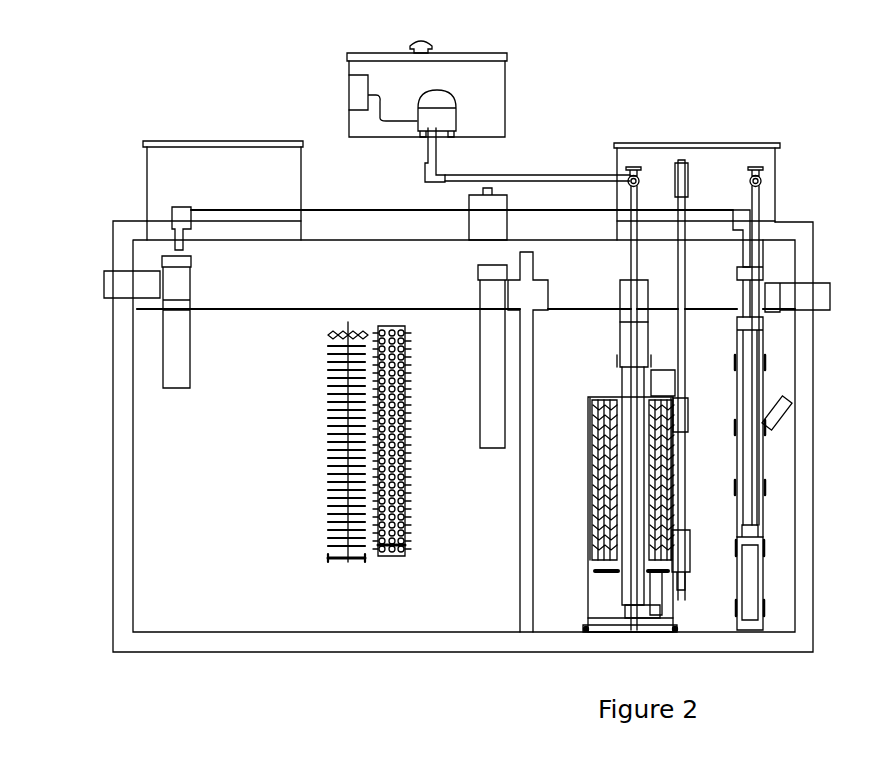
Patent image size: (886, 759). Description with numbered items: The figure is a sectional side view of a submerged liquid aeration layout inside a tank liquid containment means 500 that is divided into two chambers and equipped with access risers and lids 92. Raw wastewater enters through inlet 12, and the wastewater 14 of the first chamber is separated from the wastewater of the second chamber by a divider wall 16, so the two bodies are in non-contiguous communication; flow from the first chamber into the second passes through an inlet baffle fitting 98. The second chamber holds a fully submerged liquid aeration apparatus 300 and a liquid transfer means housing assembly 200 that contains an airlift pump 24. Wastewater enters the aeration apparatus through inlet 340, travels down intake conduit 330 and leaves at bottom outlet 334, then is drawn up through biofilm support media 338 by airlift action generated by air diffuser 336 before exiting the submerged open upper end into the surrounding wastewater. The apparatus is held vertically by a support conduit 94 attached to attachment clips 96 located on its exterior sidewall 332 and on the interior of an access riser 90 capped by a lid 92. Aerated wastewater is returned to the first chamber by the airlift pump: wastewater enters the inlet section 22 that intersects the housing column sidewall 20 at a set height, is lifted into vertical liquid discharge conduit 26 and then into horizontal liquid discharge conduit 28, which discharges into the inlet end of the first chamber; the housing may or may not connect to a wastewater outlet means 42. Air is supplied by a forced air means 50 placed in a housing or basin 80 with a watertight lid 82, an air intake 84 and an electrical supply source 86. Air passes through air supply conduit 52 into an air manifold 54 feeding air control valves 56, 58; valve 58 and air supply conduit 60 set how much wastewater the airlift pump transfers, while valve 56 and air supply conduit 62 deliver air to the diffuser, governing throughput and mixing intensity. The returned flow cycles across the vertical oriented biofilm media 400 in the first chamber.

The inlet 12 is at (113, 282).
The wastewater 14 is at (337, 308).
The divider wall 16 is at (520, 557).
The housing column sidewall 20 is at (763, 368).
The inlet section 22 is at (778, 426).
The airlift pump 24 is at (750, 582).
The vertical liquid discharge conduit 26 is at (738, 297).
The horizontal liquid discharge conduit 28 is at (361, 210).
The wastewater outlet means 42 is at (826, 298).
The forced air means 50 is at (456, 118).
The air supply conduit 52 is at (437, 152).
The air manifold 54 is at (520, 176).
The air control valve 56 is at (625, 173).
The air control valve 58 is at (765, 174).
The air supply conduit 60 is at (795, 248).
The air supply conduit 62 is at (640, 293).
The housing or basin 80 is at (505, 88).
The watertight lid 82 is at (474, 53).
The air intake 84 is at (416, 43).
The electrical supply source 86 is at (356, 92).
The access riser 90 is at (147, 172).
The housing lid 92 is at (192, 142).
The support conduit 94 is at (688, 206).
The attachment clips 96 is at (675, 170).
The inlet baffle fitting 98 is at (493, 450).
The liquid transfer means housing assembly 200 is at (728, 505).
The liquid aeration apparatus 300 is at (585, 418).
The intake conduit 330 is at (620, 328).
The exterior sidewall 332 is at (590, 472).
The bottom outlet 334 is at (593, 613).
The air diffuser 336 is at (590, 565).
The biofilm support media 338 is at (592, 517).
The inlet 340 is at (665, 378).
The vertical oriented biofilm media 400 is at (300, 420).
The tank liquid containment means 500 is at (58, 425).